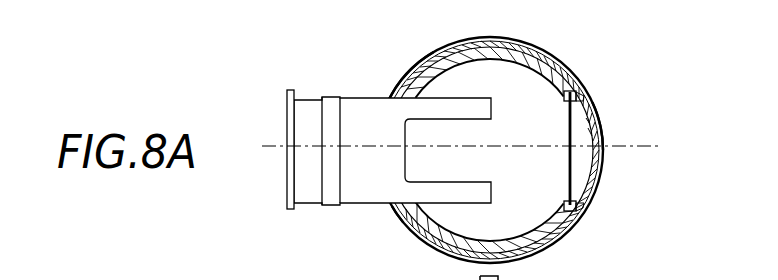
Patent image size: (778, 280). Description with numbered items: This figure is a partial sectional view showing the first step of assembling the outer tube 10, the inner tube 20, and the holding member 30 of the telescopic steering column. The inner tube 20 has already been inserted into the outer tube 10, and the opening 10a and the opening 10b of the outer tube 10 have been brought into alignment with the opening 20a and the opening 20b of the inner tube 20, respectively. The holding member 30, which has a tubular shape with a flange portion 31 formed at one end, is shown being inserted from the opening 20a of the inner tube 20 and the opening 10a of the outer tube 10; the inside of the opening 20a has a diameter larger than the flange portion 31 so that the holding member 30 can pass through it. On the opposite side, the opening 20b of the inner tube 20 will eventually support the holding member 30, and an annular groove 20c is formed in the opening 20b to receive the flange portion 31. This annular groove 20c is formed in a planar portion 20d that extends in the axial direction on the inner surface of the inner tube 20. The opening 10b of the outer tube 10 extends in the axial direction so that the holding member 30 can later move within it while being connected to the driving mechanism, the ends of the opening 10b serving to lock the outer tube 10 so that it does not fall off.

The outer tube 10 is at (566, 235).
The opening 10a is at (393, 91).
The opening 10b is at (596, 104).
The inner tube 20 is at (548, 216).
The opening 20a is at (393, 203).
The opening 20b is at (594, 120).
The annular groove 20c is at (594, 133).
The planar portion 20d is at (568, 137).
The holding member 30 is at (362, 98).
The flange portion 31 is at (288, 91).